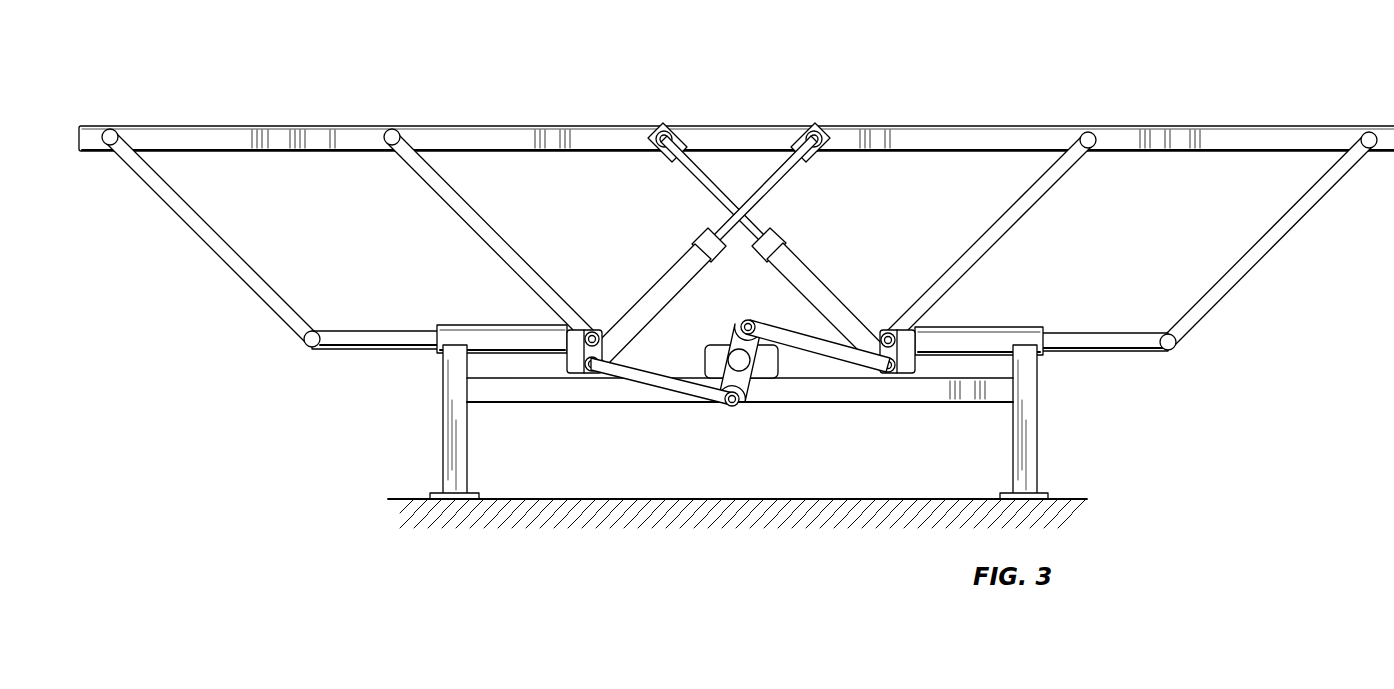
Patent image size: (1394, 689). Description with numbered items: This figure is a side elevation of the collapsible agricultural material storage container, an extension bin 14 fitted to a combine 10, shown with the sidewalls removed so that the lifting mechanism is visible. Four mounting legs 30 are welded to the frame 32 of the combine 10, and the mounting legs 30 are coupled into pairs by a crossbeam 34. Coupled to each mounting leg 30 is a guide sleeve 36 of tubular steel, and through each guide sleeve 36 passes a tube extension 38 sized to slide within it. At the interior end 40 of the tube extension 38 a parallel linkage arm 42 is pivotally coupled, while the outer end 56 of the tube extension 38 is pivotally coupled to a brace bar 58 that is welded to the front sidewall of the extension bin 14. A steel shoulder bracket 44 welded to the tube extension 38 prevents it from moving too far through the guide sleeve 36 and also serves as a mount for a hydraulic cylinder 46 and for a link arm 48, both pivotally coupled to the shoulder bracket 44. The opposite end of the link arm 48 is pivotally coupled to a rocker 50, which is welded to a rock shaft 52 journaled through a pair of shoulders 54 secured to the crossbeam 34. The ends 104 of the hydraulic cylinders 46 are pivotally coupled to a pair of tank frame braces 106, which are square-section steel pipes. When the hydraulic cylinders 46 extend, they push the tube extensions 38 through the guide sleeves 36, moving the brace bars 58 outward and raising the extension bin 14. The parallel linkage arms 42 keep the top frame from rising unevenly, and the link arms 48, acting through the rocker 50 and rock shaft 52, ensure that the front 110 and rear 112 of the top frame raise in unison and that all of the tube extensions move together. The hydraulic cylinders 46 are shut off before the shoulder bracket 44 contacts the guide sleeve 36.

The combine 10 is at (317, 75).
The extension bin 14 is at (327, 128).
The mounting legs 30 is at (448, 417).
The frame 32 is at (1068, 499).
The crossbeam 34 is at (970, 392).
The guide sleeve 36 is at (497, 338).
The tube extension 38 is at (372, 338).
The interior end 40 is at (593, 315).
The parallel linkage arm 42 is at (447, 188).
The shoulder bracket 44 is at (575, 368).
The hydraulic cylinder 46 is at (695, 258).
The link arm 48 is at (650, 388).
The rocker 50 is at (748, 405).
The rock shaft 52 is at (726, 405).
The shoulders 54 is at (768, 378).
The outer end 56 is at (312, 347).
The brace bar 58 is at (205, 238).
The ends 104 is at (675, 128).
The tank frame braces 106 is at (1225, 135).
The front 110 is at (130, 247).
The rear 112 is at (1310, 266).